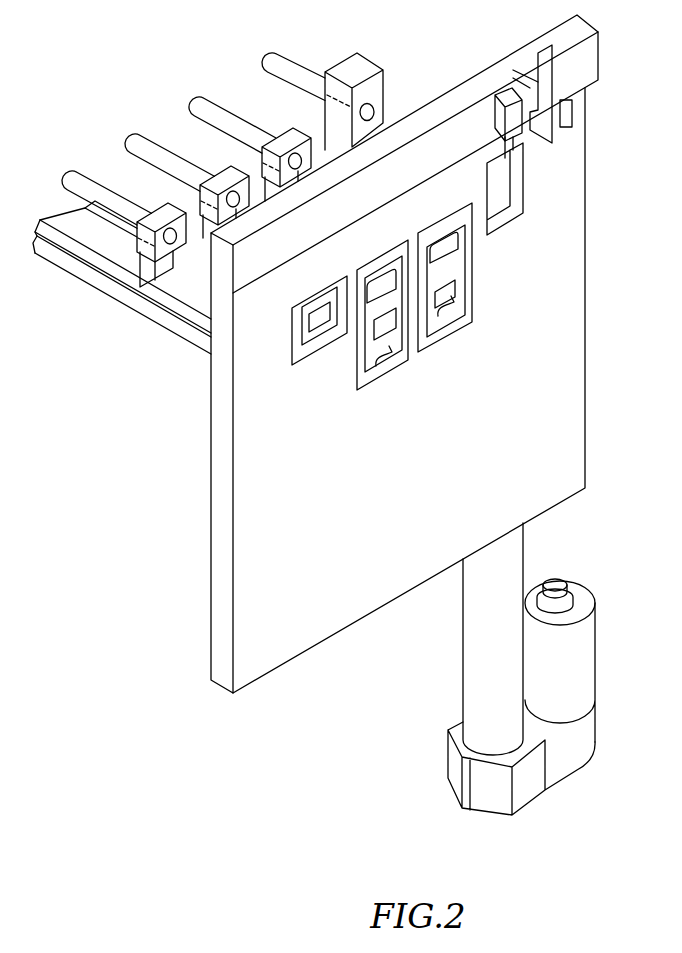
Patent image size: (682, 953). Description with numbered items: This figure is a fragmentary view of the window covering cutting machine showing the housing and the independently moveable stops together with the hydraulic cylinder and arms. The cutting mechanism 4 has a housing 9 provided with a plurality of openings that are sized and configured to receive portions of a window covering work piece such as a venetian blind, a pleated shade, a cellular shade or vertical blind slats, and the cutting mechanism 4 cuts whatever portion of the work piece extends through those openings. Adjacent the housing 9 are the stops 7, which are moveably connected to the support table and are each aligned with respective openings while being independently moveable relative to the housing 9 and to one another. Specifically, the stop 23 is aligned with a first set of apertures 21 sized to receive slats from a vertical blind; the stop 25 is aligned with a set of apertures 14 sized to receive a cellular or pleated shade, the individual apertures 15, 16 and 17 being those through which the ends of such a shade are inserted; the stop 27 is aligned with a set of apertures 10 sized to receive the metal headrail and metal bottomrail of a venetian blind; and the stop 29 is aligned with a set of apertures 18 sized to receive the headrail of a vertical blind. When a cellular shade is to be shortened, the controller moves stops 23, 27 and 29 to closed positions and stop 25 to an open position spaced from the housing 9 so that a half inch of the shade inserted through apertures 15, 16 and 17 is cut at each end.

The cutting mechanism 4 is at (382, 370).
The stops 7 is at (102, 314).
The housing 9 is at (273, 657).
The set of apertures 10 is at (386, 390).
The set of apertures 14 is at (465, 310).
The aperture 15 is at (453, 305).
The aperture 16 is at (448, 284).
The aperture 17 is at (449, 256).
The set of apertures 18 is at (319, 379).
The first set of apertures 21 is at (511, 218).
The stop 23 is at (357, 70).
The stop 25 is at (284, 146).
The stop 27 is at (214, 182).
The stop 29 is at (153, 222).